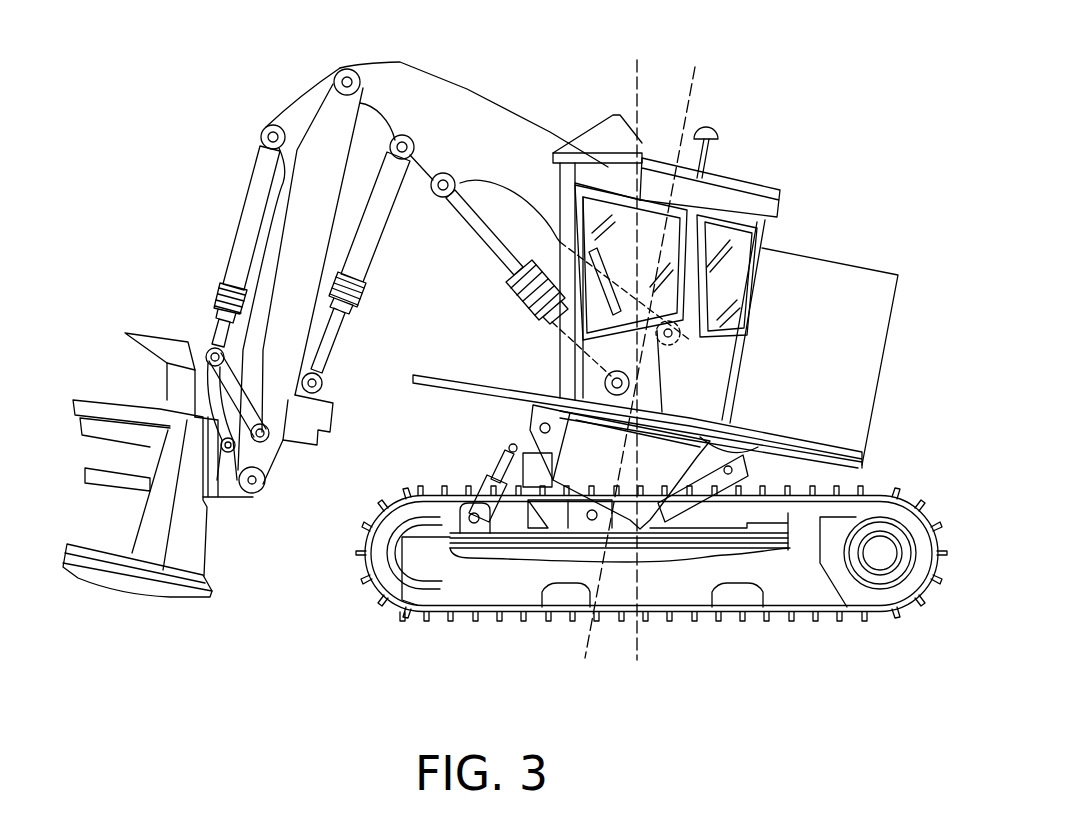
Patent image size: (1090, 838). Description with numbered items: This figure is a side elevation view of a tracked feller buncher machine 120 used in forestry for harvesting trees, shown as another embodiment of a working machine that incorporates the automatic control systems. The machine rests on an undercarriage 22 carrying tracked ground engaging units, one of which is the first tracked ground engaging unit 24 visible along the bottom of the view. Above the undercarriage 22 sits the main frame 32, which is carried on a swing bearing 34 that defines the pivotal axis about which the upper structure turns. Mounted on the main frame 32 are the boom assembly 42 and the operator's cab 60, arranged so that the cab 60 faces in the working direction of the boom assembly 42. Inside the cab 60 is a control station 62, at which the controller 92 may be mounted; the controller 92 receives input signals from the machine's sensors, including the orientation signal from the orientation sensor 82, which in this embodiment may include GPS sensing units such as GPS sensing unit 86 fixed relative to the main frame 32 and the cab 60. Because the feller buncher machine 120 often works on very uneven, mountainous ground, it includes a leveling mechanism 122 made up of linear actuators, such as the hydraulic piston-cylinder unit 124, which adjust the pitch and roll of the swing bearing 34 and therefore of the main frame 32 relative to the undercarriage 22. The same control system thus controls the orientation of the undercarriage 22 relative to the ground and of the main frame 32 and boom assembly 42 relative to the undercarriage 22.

The tracked feller buncher machine 120 is at (853, 128).
The undercarriage 22 is at (822, 506).
The first tracked ground engaging unit 24 is at (945, 546).
The main frame 32 is at (865, 455).
The swing bearing 34 is at (768, 448).
The boom assembly 42 is at (383, 50).
The operator's cab 60 is at (740, 180).
The control station 62 is at (602, 258).
The controller 92 is at (632, 176).
The orientation sensor 82 is at (707, 124).
The GPS sensing unit 86 is at (756, 129).
The leveling mechanism 122 is at (494, 447).
The hydraulic piston-cylinder unit 124 is at (592, 470).